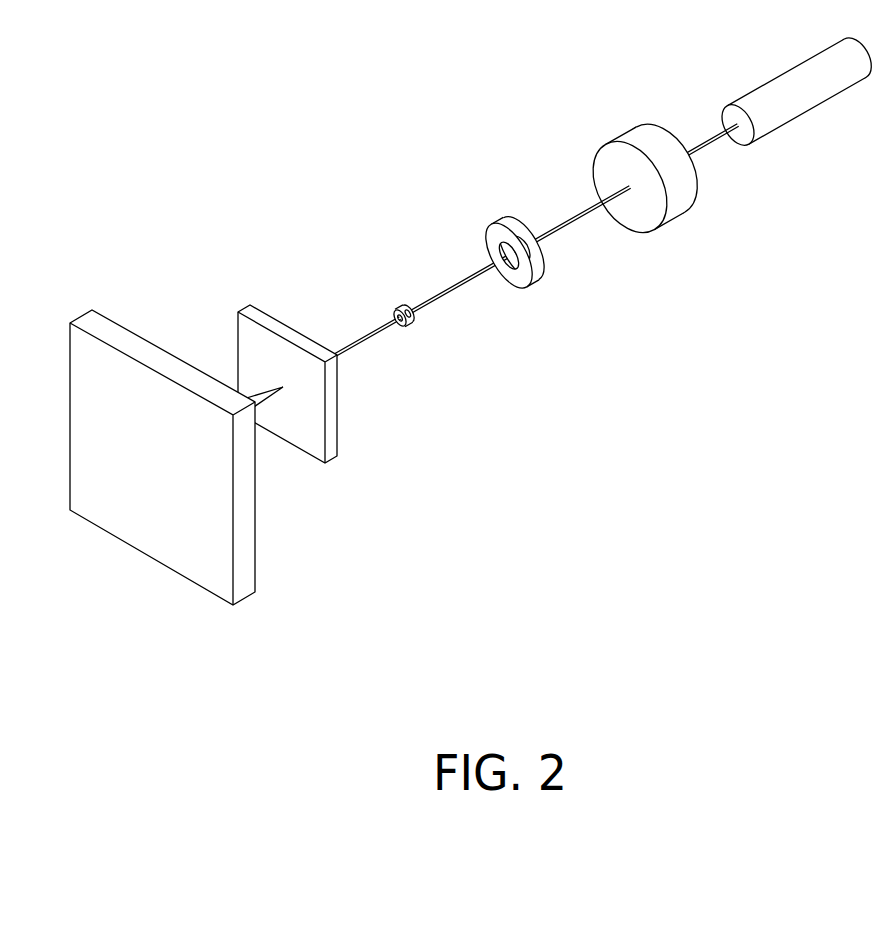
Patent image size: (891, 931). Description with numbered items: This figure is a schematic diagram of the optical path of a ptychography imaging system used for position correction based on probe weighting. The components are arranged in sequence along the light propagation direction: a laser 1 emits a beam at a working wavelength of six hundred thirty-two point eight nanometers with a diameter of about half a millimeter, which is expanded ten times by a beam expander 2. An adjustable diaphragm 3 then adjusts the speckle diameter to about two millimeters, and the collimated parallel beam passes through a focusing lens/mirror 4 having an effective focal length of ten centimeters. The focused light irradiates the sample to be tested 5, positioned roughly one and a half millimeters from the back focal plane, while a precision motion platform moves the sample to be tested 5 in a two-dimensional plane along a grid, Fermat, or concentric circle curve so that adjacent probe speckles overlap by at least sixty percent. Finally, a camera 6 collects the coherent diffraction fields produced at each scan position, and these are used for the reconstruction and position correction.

The laser 1 is at (796, 91).
The beam expander 2 is at (645, 175).
The adjustable diaphragm 3 is at (512, 242).
The focusing lens/mirror 4 is at (397, 300).
The sample to be tested 5 is at (281, 368).
The camera 6 is at (149, 445).